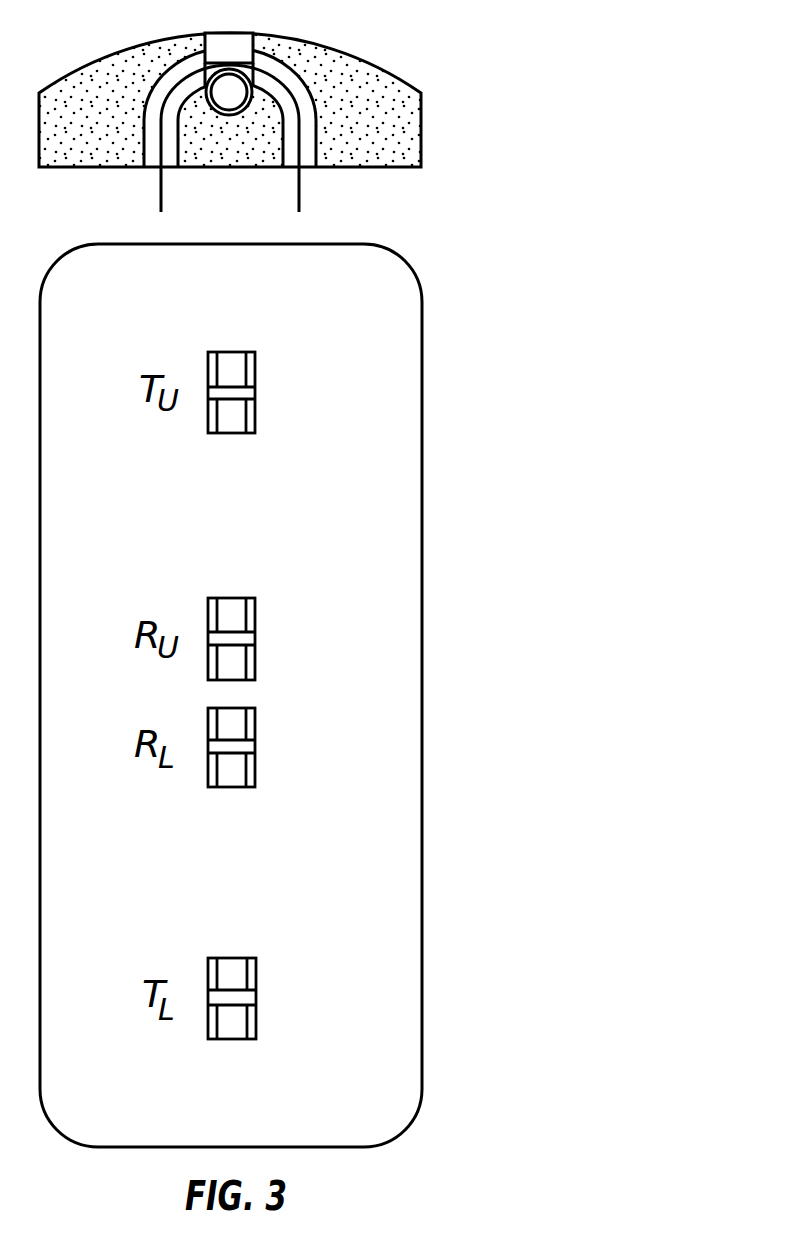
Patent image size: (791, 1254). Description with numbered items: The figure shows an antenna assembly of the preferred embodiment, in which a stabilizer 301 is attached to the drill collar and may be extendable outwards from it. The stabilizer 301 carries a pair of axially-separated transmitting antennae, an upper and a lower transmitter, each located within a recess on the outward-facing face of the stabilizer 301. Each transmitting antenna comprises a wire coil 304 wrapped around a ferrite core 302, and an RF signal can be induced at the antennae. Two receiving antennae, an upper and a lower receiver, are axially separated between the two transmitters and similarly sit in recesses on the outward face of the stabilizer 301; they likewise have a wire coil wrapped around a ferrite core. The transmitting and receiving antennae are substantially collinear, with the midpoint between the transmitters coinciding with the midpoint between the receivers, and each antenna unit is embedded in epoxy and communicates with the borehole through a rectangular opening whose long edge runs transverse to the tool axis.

The stabilizer 301 is at (421, 323).
The ferrite core 302 is at (238, 413).
The wire coil 304 is at (255, 393).